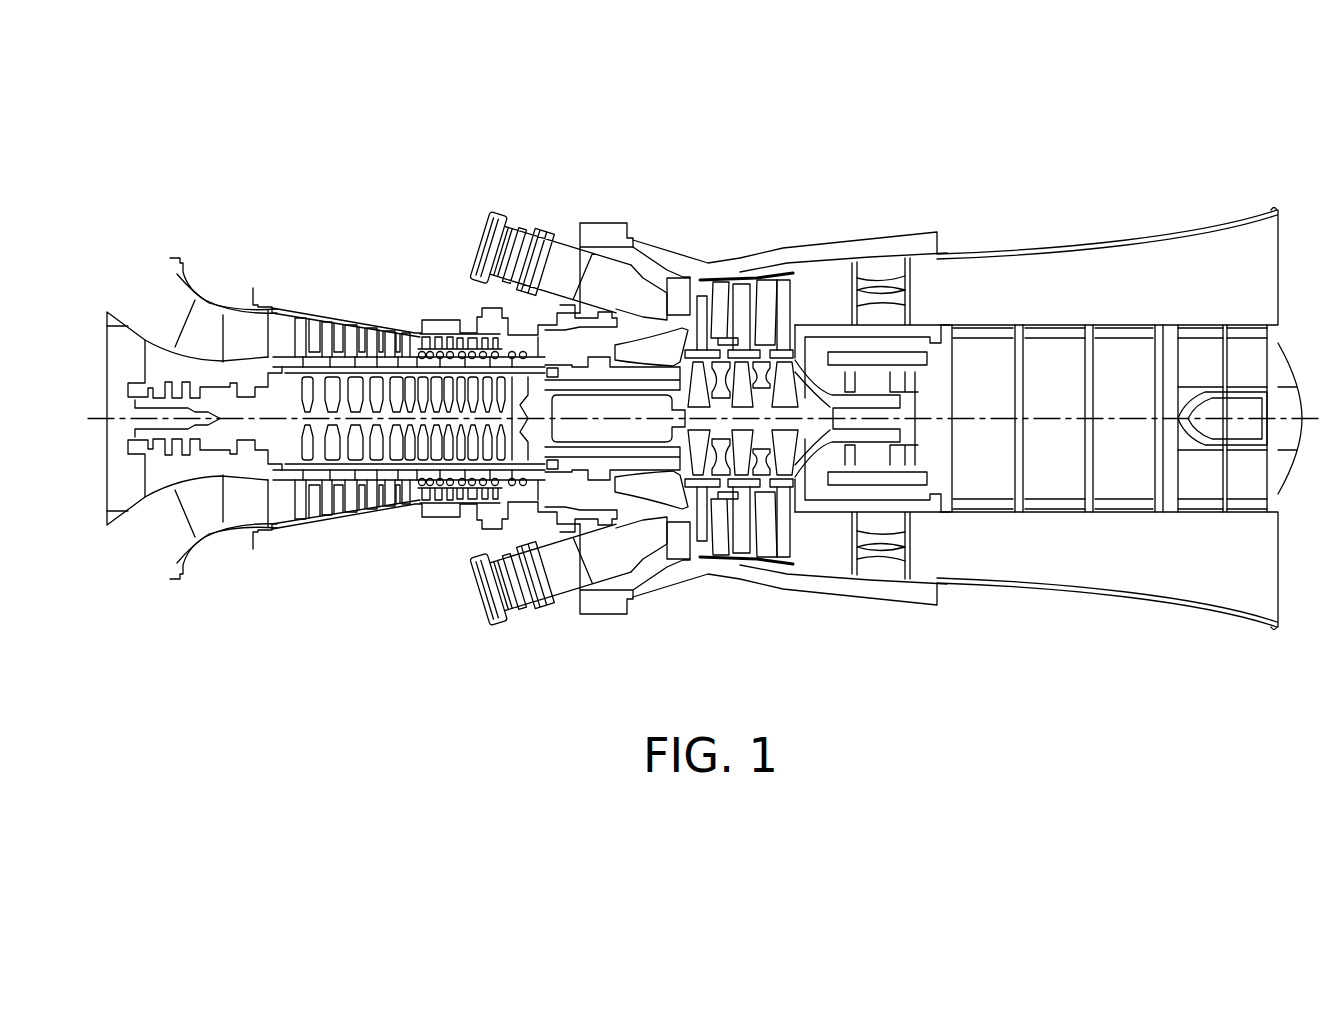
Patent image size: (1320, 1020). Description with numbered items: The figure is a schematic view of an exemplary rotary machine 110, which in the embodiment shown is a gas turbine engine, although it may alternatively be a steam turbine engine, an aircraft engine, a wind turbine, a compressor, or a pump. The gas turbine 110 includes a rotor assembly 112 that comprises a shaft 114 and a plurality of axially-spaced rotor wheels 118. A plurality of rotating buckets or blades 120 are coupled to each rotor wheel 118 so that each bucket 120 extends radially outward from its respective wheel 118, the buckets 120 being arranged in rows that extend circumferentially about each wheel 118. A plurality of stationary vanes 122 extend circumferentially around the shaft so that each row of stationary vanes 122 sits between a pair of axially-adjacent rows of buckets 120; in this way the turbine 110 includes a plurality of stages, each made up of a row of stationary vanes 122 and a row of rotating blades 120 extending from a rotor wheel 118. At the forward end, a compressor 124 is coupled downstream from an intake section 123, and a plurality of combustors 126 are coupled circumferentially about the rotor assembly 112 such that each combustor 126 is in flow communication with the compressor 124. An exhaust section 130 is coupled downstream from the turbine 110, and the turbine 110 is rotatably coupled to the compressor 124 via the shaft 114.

The rotary machine 110 is at (500, 158).
The rotor assembly 112 is at (680, 295).
The shaft 114 is at (870, 387).
The rotor wheel 118 is at (798, 333).
The rotating bucket 120 is at (778, 300).
The stationary vane 122 is at (722, 300).
The intake section 123 is at (148, 270).
The compressor 124 is at (318, 302).
The combustor 126 is at (562, 230).
The exhaust section 130 is at (1073, 200).